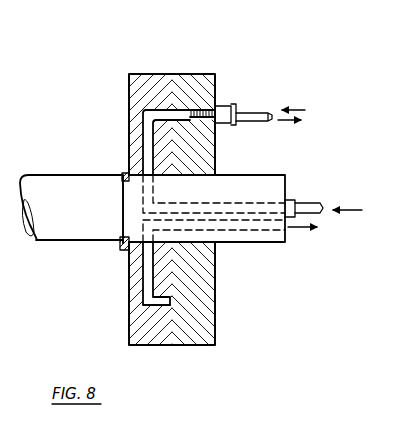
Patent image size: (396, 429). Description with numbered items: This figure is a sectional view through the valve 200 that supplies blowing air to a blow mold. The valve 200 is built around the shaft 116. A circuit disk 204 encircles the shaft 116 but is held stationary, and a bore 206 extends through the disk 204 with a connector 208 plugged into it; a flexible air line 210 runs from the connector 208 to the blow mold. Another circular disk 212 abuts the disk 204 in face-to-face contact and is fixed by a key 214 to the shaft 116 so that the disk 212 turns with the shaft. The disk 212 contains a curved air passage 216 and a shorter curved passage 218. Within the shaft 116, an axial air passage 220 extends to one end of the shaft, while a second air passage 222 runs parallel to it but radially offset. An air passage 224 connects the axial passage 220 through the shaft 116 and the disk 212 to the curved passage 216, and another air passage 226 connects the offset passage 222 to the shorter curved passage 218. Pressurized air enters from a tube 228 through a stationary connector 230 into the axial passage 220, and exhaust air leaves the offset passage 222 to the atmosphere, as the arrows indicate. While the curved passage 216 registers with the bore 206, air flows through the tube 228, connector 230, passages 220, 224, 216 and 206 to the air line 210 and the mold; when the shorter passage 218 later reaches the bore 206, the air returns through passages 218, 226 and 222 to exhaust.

The valve 200 is at (201, 60).
The circuit disk 204 is at (216, 74).
The bore 206 is at (182, 109).
The connector 208 is at (217, 101).
The flexible air line 210 is at (251, 120).
The circular disk 212 is at (131, 87).
The key 214 is at (123, 175).
The curved air passage 216 is at (160, 110).
The shorter curved passage 218 is at (157, 304).
The axial air passage 220 is at (233, 205).
The radially offset air passage 222 is at (247, 226).
The air passage 224 is at (152, 127).
The air passage 226 is at (150, 274).
The tube 228 is at (317, 203).
The stationary connector 230 is at (293, 200).
The shaft 116 is at (72, 218).